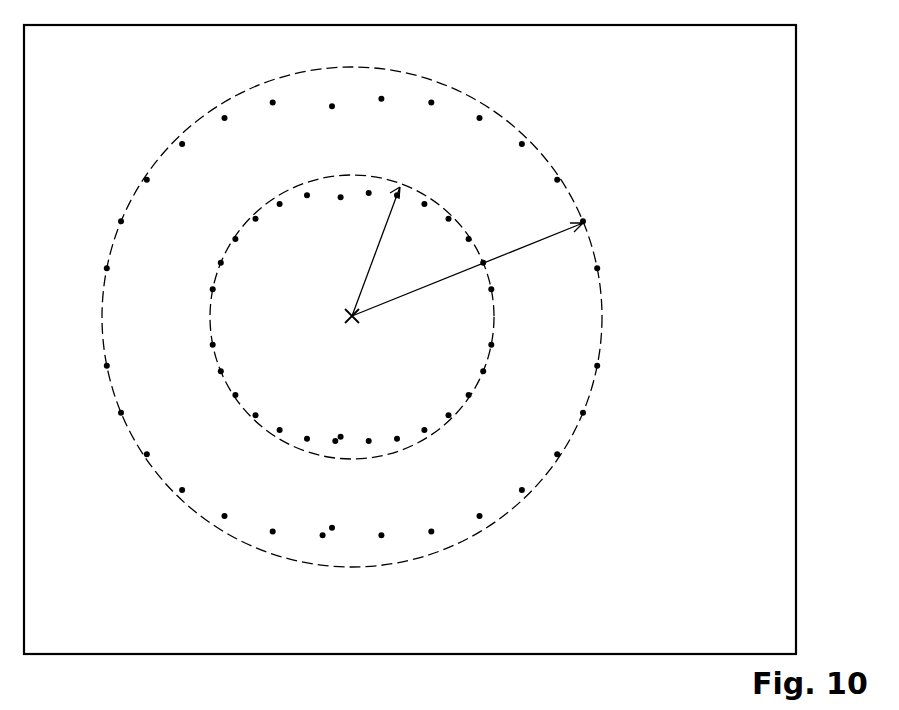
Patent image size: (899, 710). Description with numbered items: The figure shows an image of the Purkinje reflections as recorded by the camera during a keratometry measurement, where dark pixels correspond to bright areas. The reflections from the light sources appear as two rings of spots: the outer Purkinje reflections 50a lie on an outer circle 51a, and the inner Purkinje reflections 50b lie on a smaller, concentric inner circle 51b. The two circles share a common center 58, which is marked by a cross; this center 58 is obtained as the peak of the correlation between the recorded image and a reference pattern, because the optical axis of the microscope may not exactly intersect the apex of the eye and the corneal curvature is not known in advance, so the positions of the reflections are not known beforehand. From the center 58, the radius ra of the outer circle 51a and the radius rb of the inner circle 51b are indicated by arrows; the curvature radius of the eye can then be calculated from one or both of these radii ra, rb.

The Purkinje reflections 50a is at (492, 110).
The circle of the reflections 51a is at (538, 150).
The Purkinje reflections 50b is at (273, 200).
The circle of the reflections 51b is at (225, 260).
The center of the circles 58 is at (337, 388).
The radius of the outer circle ra is at (467, 269).
The radius of the inner circle rb is at (372, 251).